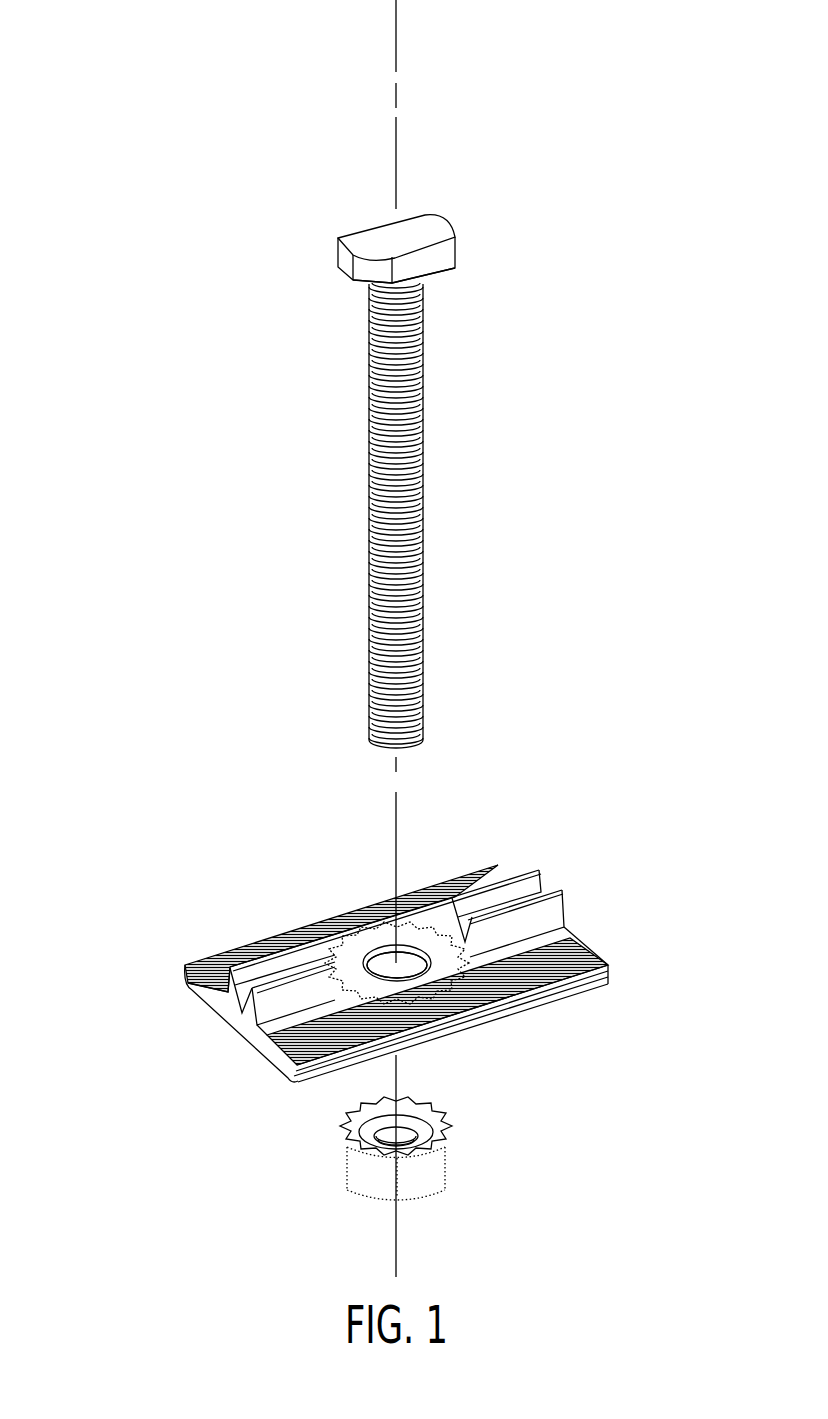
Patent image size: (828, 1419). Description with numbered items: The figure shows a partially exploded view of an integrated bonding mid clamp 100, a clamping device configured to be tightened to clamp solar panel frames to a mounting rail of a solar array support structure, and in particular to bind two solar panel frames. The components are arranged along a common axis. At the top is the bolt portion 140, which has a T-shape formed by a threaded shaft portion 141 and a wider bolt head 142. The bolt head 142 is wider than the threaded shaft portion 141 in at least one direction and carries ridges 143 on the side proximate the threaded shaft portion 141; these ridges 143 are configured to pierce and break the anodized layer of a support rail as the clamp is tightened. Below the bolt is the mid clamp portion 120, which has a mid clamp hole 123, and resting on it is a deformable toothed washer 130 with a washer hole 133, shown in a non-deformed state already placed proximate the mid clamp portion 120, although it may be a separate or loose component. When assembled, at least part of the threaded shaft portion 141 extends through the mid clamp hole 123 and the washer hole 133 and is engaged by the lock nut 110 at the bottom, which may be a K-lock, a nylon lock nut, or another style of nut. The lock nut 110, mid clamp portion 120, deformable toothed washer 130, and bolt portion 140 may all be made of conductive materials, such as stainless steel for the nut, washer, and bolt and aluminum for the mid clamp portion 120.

The integrated bonding mid clamp 100 is at (166, 454).
The lock nut 110 is at (438, 1168).
The mid clamp portion 120 is at (412, 942).
The mid clamp hole 123 is at (411, 950).
The deformable toothed washer 130 is at (389, 903).
The washer hole 133 is at (422, 920).
The bolt portion 140 is at (415, 451).
The threaded shaft portion 141 is at (412, 402).
The bolt head 142 is at (428, 228).
The ridges 143 is at (436, 269).